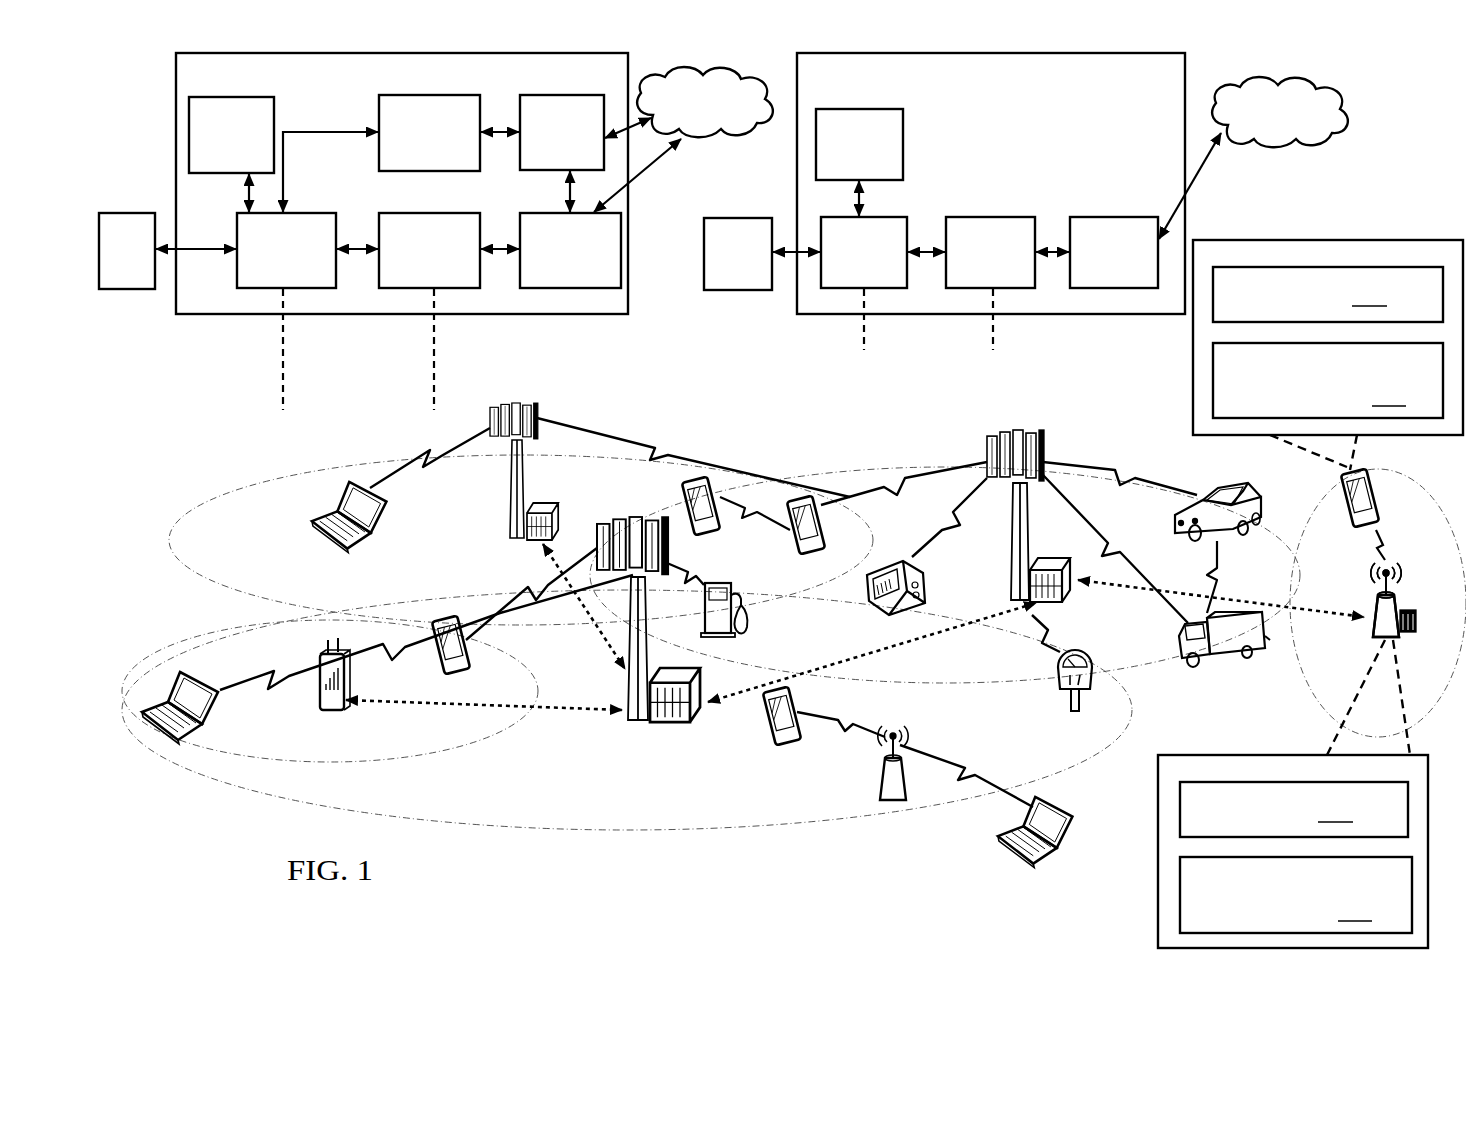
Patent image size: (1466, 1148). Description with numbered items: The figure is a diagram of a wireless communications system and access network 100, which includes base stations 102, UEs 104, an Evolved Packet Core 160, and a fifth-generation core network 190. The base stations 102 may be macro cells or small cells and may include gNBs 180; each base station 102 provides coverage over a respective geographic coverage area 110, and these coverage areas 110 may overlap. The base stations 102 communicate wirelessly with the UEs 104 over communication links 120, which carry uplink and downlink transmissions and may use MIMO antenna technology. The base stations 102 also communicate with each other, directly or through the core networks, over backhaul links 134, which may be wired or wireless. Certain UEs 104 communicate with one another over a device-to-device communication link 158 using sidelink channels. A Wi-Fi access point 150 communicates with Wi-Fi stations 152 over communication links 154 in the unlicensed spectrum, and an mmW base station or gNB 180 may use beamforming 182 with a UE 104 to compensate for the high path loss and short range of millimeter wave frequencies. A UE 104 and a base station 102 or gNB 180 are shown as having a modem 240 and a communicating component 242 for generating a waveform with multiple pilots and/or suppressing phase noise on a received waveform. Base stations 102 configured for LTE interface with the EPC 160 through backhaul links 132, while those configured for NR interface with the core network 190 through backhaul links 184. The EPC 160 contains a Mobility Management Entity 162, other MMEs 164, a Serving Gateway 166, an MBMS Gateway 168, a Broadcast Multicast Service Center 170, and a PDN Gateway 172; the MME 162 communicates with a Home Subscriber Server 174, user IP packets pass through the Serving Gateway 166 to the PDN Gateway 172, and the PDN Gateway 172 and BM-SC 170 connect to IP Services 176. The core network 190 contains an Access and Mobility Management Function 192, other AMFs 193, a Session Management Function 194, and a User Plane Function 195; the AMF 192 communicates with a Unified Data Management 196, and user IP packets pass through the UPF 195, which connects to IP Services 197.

The access network 100 is at (175, 102).
The base station 102 is at (512, 516).
The UE 104 is at (362, 546).
The geographic coverage area 110 is at (232, 590).
The communication link 120 is at (428, 450).
The backhaul link 132 is at (285, 324).
The backhaul link 134 is at (598, 640).
The Wi-Fi access point 150 is at (895, 800).
The Wi-Fi station 152 is at (768, 718).
The communication link 154 is at (846, 722).
The D2D communication link 158 is at (755, 514).
The Evolved Packet Core 160 is at (301, 107).
The Mobility Management Entity 162 is at (310, 212).
The other MMEs 164 is at (208, 96).
The Serving Gateway 166 is at (445, 212).
The MBMS Gateway 168 is at (426, 94).
The Broadcast Multicast Service Center 170 is at (554, 94).
The PDN Gateway 172 is at (540, 212).
The Home Subscriber Server 174 is at (124, 212).
The IP Services 176 is at (718, 138).
The gNB 180 is at (1384, 598).
The beamforming 182 is at (1386, 550).
The backhaul link 184 is at (866, 326).
The 5G Core 190 is at (964, 125).
The Access and Mobility Management Function 192 is at (878, 216).
The other AMFs 193 is at (855, 108).
The Session Management Function 194 is at (1008, 216).
The User Plane Function 195 is at (1135, 216).
The Unified Data Management 196 is at (760, 217).
The IP Services 197 is at (1350, 112).
The modem 240 is at (1310, 594).
The communicating component 242 is at (1311, 638).